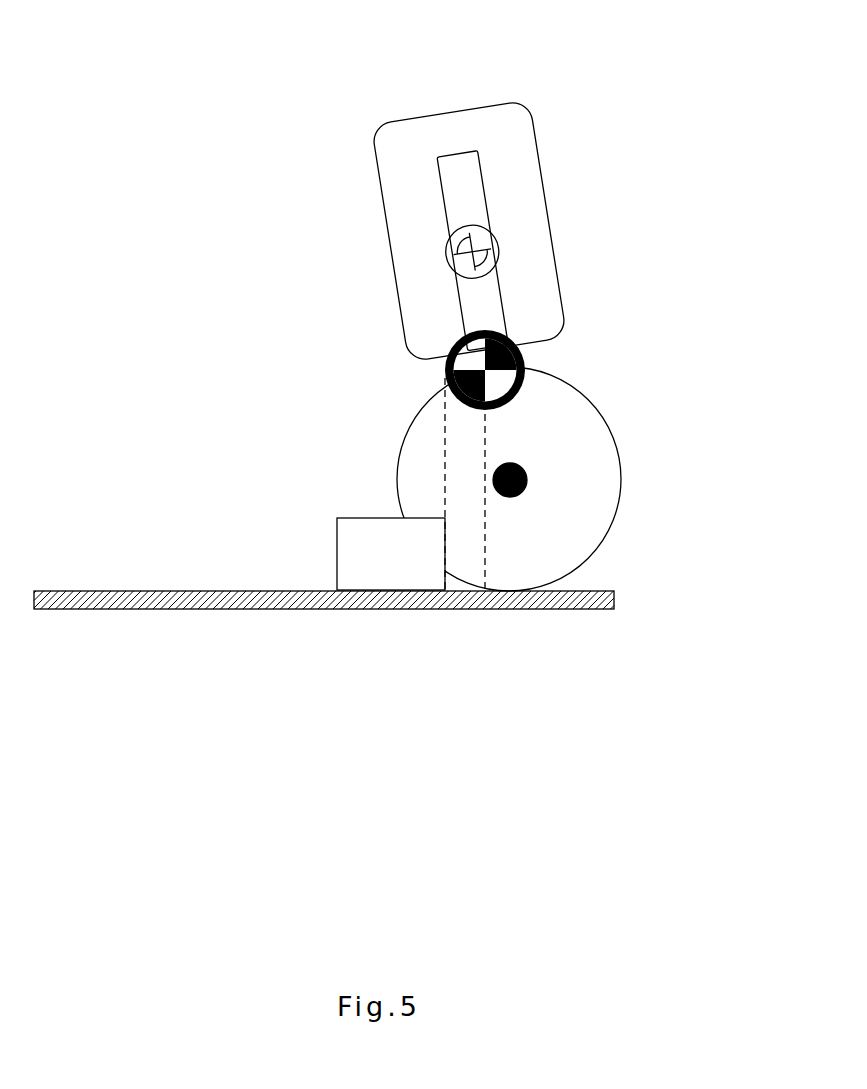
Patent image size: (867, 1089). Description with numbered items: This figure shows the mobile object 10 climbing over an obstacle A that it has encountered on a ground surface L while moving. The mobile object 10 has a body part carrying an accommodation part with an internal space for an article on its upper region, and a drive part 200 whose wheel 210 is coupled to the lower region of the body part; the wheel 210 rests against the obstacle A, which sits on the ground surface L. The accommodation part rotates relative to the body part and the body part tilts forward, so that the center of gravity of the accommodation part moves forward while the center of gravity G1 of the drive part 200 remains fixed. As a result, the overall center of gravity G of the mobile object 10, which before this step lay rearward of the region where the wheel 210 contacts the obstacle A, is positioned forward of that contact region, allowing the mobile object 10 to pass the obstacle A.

The mobile object 10 is at (457, 85).
The drive part 200 is at (576, 479).
The wheel 210 is at (583, 427).
The center of gravity G is at (525, 363).
The center of gravity of the drive part G1 is at (527, 480).
The ground surface L is at (176, 610).
The obstacle A is at (390, 572).